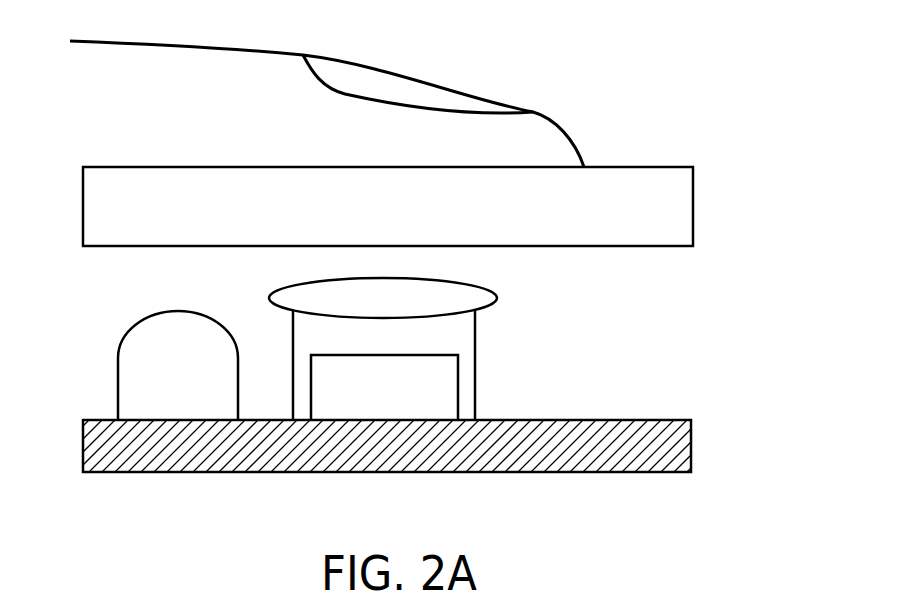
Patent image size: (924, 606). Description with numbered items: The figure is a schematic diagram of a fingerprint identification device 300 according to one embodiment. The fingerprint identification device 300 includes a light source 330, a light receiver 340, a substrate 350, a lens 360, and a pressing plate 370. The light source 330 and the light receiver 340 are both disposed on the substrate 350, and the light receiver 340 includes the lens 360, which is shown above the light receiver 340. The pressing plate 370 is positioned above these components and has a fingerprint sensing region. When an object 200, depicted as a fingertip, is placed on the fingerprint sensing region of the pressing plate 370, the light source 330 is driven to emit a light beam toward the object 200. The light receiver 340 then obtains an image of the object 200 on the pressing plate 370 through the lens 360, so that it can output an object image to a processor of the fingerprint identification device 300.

The object 200 is at (238, 54).
The fingerprint identification device 300 is at (791, 534).
The light source 330 is at (125, 385).
The light receiver 340 is at (445, 387).
The substrate 350 is at (683, 445).
The lens 360 is at (485, 300).
The pressing plate 370 is at (682, 210).